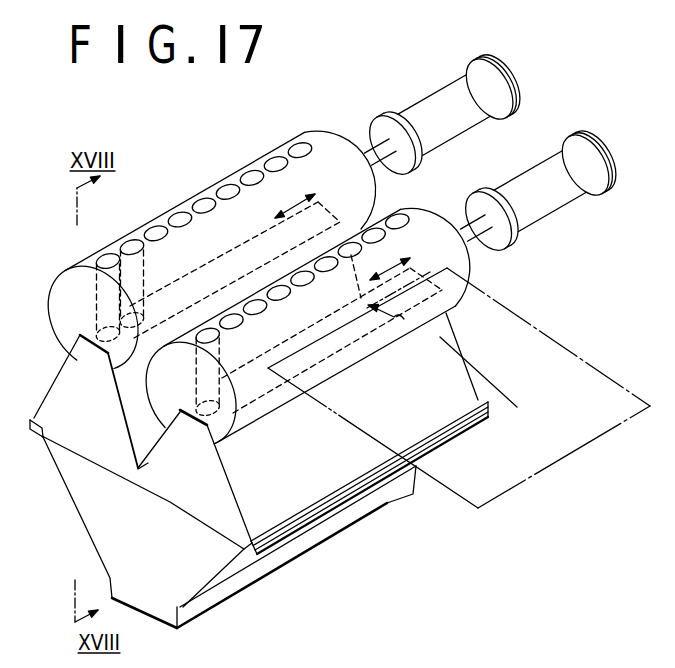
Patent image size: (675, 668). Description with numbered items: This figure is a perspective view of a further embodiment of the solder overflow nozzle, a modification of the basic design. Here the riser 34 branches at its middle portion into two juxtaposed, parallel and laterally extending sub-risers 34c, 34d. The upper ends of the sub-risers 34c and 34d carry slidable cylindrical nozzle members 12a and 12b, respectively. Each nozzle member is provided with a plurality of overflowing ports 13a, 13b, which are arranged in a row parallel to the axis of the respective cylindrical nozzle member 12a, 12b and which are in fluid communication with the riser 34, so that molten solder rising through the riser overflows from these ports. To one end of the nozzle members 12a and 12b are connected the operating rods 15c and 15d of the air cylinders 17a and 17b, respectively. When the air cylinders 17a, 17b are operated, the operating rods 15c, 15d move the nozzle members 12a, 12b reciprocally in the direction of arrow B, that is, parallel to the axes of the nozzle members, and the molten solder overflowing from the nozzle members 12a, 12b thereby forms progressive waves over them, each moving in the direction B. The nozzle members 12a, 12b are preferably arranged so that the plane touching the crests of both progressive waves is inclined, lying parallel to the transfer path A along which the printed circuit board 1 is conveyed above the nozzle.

The printed circuit board 1 is at (553, 464).
The cylindrical nozzle member 12a is at (253, 415).
The cylindrical nozzle member 12b is at (72, 287).
The overflowing ports 13a is at (207, 335).
The overflowing ports 13b is at (132, 248).
The operating rod 15c is at (477, 245).
The operating rod 15d is at (368, 158).
The air cylinder 17a is at (563, 195).
The air cylinder 17b is at (493, 95).
The riser 34 is at (110, 537).
The sub-riser 34c is at (288, 497).
The sub-riser 34d is at (68, 392).